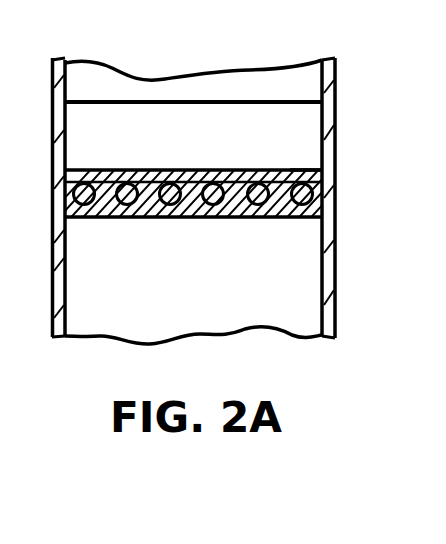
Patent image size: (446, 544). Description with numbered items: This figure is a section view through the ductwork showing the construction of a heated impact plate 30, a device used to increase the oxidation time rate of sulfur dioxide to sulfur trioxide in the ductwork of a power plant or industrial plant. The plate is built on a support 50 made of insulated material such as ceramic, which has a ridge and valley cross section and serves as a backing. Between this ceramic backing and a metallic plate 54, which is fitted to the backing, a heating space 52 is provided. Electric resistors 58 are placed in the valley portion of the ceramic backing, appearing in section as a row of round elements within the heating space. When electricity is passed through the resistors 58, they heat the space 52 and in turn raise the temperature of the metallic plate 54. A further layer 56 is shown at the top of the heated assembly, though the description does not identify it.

The heated impact plate 30 is at (198, 268).
The support 50 is at (205, 192).
The heating space 52 is at (135, 172).
The metallic plate 54 is at (253, 172).
The top surface film 56 is at (308, 172).
The electric resistors 58 is at (88, 172).